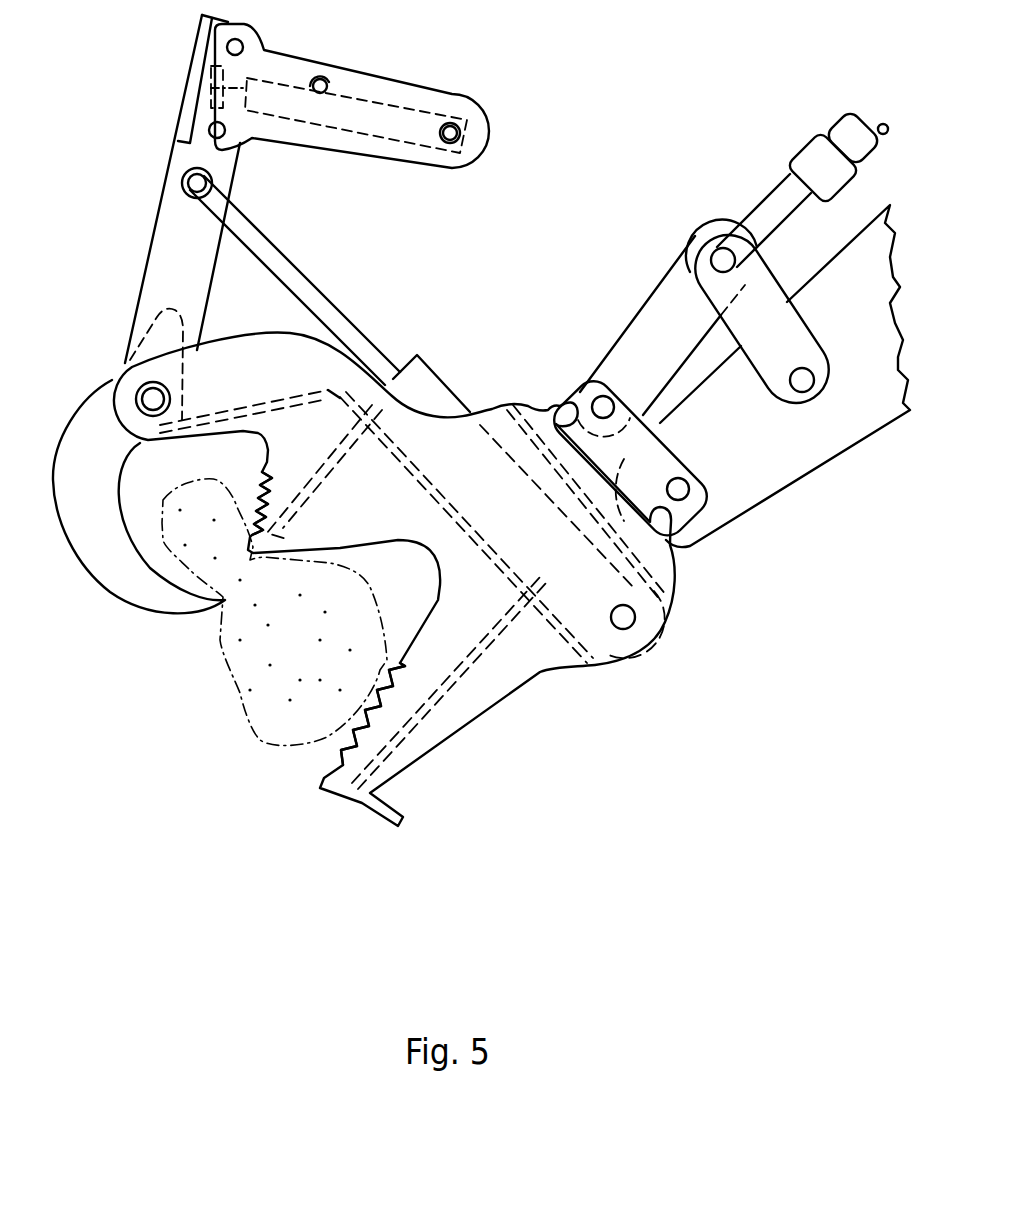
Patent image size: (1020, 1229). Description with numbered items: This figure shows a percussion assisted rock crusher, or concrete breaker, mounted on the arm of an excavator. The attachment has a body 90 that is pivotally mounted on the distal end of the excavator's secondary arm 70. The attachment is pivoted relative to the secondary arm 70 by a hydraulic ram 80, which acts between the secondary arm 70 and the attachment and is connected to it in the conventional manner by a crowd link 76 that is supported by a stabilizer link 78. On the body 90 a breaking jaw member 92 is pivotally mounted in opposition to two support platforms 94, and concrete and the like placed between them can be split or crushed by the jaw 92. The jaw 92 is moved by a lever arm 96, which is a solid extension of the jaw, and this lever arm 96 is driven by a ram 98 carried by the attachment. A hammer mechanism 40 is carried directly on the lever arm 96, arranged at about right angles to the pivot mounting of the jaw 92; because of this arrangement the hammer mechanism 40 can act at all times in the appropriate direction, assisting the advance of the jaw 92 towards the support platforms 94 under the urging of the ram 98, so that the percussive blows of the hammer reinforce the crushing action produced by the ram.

The hammer mechanism 40 is at (397, 85).
The secondary arm 70 is at (760, 470).
The crowd link 76 is at (655, 328).
The stabilizer link 78 is at (797, 340).
The hydraulic ram 80 is at (853, 128).
The body 90 is at (650, 640).
The breaking jaw member 92 is at (128, 578).
The support platforms 94 is at (250, 544).
The lever arm 96 is at (178, 256).
The ram 98 is at (430, 392).